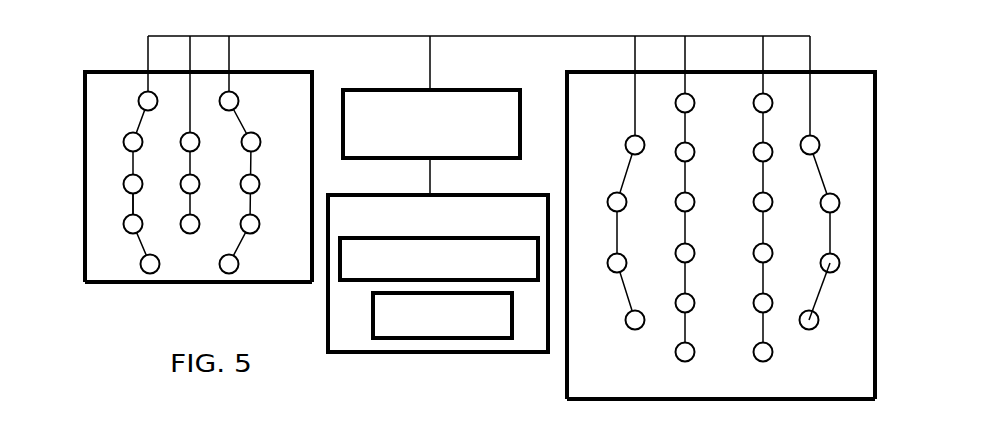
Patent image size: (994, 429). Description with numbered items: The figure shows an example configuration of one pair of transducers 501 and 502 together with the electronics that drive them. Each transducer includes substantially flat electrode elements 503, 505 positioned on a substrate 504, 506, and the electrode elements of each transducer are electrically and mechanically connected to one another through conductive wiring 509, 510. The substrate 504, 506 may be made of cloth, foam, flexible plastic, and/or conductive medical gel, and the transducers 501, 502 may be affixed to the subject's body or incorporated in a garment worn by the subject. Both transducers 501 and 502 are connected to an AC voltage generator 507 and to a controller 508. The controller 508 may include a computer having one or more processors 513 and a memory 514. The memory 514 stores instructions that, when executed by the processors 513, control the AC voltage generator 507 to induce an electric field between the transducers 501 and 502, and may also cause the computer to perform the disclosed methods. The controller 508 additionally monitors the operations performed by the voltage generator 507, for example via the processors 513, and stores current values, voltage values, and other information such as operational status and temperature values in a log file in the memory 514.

The transducer 501 is at (166, 162).
The transducer 502 is at (749, 215).
The electrode element 503 is at (138, 100).
The substrate 504 is at (105, 268).
The electrode element 505 is at (813, 136).
The substrate 506 is at (845, 374).
The AC voltage generator 507 is at (470, 90).
The controller 508 is at (443, 267).
The conductive wiring 509 is at (130, 207).
The conductive wiring 510 is at (822, 293).
The processor 513 is at (528, 280).
The memory 514 is at (373, 310).